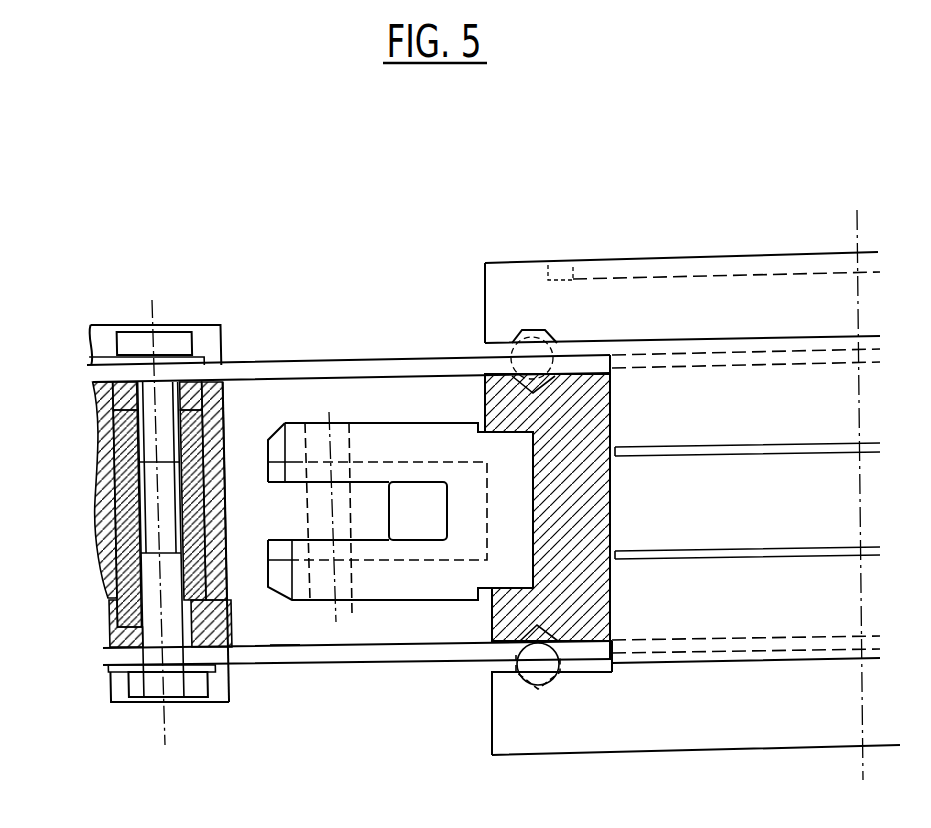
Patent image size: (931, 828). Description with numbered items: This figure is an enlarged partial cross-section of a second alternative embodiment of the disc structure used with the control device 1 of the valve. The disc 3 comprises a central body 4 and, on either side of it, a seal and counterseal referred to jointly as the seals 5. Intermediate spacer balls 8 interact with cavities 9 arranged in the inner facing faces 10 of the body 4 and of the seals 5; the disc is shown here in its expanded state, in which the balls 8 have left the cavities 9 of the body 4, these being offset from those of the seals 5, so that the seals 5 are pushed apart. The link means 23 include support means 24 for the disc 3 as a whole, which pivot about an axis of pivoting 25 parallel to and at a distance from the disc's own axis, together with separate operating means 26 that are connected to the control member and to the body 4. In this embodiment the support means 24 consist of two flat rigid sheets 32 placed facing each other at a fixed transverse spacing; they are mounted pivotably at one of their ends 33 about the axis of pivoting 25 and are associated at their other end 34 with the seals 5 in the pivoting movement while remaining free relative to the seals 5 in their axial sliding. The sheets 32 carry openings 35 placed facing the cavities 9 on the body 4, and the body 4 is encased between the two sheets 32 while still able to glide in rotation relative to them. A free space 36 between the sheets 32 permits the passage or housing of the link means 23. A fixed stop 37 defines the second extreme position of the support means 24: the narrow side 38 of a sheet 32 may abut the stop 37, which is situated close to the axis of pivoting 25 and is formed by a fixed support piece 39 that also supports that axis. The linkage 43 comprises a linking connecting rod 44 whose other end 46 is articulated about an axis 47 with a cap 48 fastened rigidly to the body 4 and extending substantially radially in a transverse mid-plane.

The control device 1 is at (242, 406).
The disc 3 is at (484, 272).
The central body 4 is at (498, 616).
The seals 5 is at (636, 261).
The intermediate spacer balls 8 is at (522, 350).
The cavities 9 is at (523, 327).
The inner facing faces 10 is at (583, 345).
The link means 23 is at (326, 414).
The support means 24 is at (222, 370).
The axis of pivoting 25 is at (161, 728).
The operating means 26 is at (345, 613).
The flat rigid sheets 32 is at (368, 662).
The ends of the sheets 33 is at (229, 656).
The other end of the sheets 34 is at (506, 650).
The openings 35 is at (580, 668).
The free space 36 is at (288, 627).
The fixed stop 37 is at (202, 335).
The narrow side 38 is at (357, 372).
The fixed support piece 39 is at (217, 550).
The linkage 43 is at (381, 500).
The linking connecting rod 44 is at (363, 530).
The other end of the connecting rod 46 is at (378, 523).
The axis 47 is at (331, 443).
The cap 48 is at (422, 447).